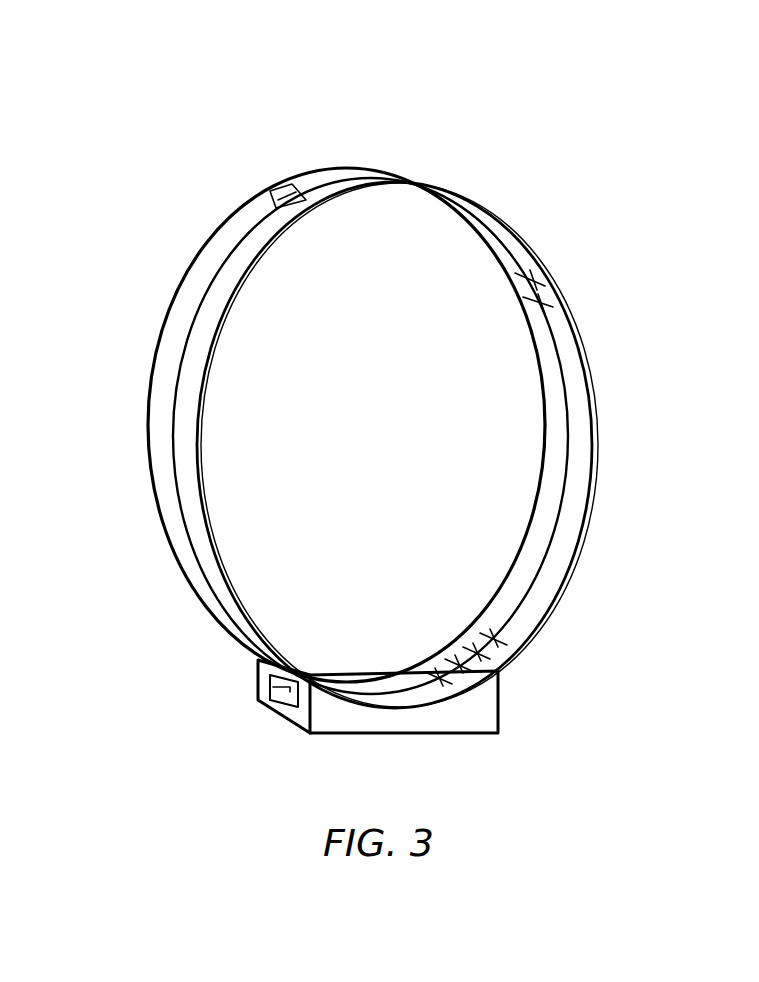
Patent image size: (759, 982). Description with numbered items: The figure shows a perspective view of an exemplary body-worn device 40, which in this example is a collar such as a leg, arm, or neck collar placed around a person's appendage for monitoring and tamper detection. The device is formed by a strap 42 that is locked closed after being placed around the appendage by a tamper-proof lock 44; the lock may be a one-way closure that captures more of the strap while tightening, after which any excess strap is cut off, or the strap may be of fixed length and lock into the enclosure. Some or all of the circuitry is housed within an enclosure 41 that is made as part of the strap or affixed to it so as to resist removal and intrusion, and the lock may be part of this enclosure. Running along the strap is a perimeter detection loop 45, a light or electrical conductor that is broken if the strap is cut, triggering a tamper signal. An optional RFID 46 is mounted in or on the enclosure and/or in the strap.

The body-worn device 40 is at (437, 398).
The enclosure 41 is at (389, 697).
The strap 42 is at (573, 323).
The tamper-proof lock 44 is at (287, 181).
The perimeter detection loop 45 is at (193, 323).
The RFID 46 is at (260, 692).